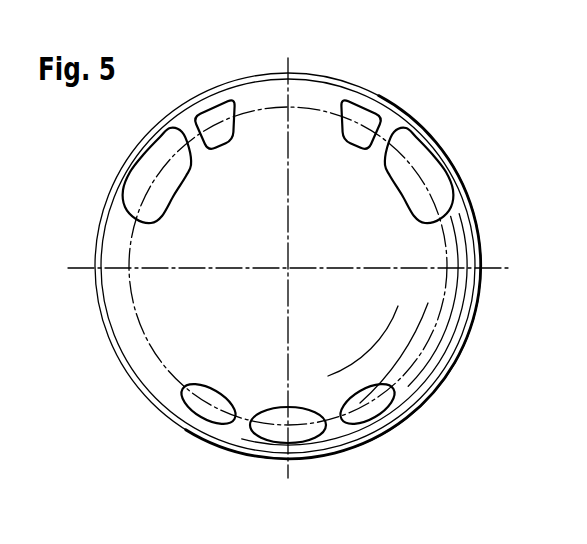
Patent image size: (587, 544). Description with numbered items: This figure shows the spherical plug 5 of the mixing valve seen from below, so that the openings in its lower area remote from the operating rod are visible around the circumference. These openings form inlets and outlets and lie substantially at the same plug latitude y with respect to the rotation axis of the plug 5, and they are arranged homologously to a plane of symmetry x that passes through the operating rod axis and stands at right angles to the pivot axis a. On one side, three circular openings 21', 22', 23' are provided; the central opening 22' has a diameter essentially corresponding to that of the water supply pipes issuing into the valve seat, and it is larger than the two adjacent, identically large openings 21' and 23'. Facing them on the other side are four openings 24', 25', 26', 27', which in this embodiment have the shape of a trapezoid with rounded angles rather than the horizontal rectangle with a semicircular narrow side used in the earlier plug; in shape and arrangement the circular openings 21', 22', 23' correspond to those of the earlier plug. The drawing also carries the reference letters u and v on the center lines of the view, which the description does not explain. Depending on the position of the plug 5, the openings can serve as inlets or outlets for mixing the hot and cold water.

The spherical plug 5 is at (447, 369).
The opening 21' is at (194, 418).
The central opening 22' is at (278, 453).
The opening 23' is at (390, 419).
The opening 24' is at (444, 171).
The opening 25' is at (380, 102).
The opening 26' is at (208, 101).
The opening 27' is at (144, 169).
The pivot axis a is at (494, 270).
The eccentric arcs u is at (290, 430).
The vertical axis v is at (291, 104).
The plane of symmetry x is at (289, 253).
The plug latitude y is at (440, 323).